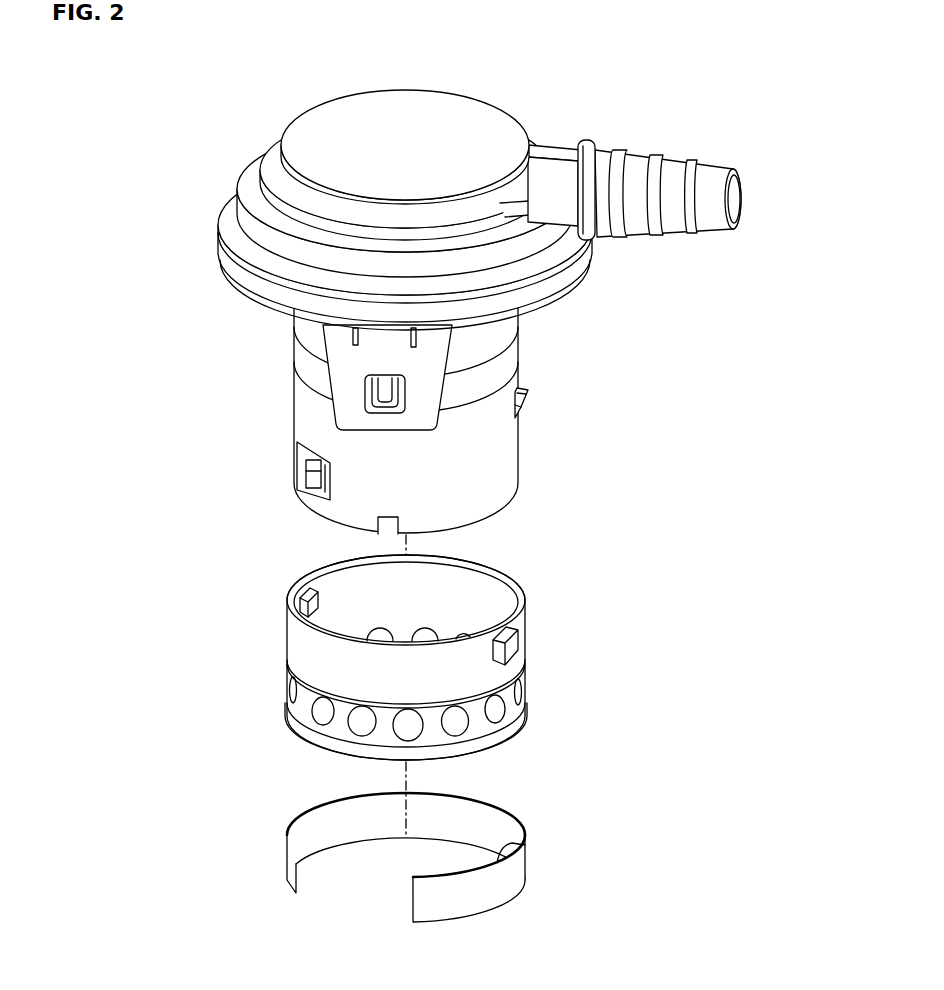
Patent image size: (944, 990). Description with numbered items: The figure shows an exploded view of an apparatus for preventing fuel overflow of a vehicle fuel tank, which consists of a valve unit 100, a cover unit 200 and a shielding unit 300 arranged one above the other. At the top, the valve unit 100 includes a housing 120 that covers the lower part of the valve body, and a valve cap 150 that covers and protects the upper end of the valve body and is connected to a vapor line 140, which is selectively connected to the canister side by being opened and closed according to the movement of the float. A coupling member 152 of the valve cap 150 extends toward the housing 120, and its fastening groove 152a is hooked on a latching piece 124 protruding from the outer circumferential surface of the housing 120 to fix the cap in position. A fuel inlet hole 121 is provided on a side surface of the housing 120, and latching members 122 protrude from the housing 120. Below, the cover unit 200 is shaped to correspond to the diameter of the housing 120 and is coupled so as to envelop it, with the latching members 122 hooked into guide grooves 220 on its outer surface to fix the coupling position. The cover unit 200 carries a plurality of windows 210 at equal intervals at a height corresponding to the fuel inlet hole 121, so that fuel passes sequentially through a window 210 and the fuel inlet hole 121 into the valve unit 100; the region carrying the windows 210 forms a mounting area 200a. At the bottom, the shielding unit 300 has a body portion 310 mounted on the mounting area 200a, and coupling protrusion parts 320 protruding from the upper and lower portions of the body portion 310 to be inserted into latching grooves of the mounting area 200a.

The valve unit 100 is at (433, 192).
The housing 120 is at (419, 418).
The fuel inlet hole 121 is at (322, 484).
The latching member 122 is at (520, 393).
The latching piece 124 is at (518, 421).
The vapor line 140 is at (680, 168).
The valve cap 150 is at (497, 122).
The coupling member 152 is at (331, 383).
The fastening groove 152a is at (385, 397).
The cover unit 200 is at (391, 648).
The mounting area 200a is at (335, 703).
The window 210 is at (396, 715).
The guide groove 220 is at (300, 610).
The shielding unit 300 is at (368, 861).
The body portion 310 is at (287, 880).
The coupling protrusion part 320 is at (503, 846).